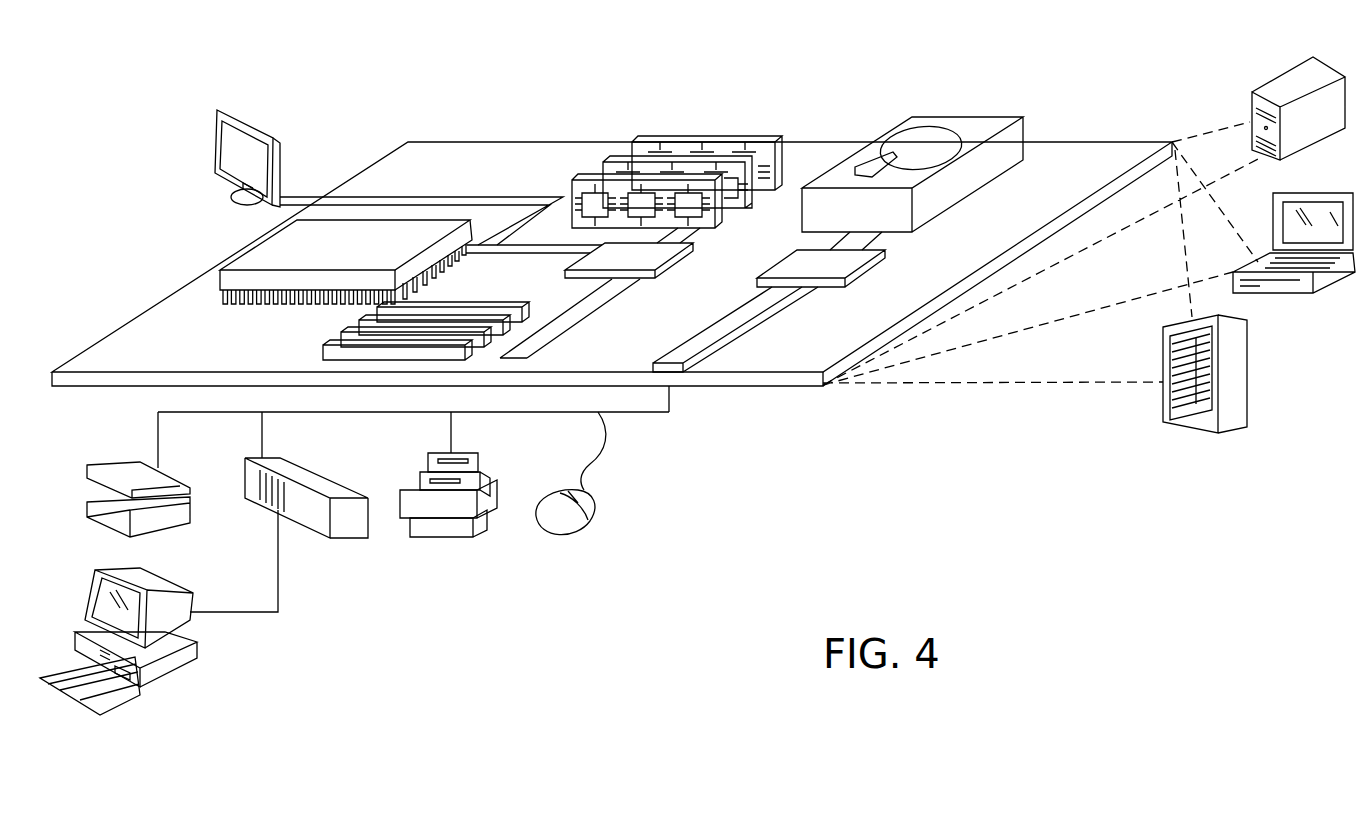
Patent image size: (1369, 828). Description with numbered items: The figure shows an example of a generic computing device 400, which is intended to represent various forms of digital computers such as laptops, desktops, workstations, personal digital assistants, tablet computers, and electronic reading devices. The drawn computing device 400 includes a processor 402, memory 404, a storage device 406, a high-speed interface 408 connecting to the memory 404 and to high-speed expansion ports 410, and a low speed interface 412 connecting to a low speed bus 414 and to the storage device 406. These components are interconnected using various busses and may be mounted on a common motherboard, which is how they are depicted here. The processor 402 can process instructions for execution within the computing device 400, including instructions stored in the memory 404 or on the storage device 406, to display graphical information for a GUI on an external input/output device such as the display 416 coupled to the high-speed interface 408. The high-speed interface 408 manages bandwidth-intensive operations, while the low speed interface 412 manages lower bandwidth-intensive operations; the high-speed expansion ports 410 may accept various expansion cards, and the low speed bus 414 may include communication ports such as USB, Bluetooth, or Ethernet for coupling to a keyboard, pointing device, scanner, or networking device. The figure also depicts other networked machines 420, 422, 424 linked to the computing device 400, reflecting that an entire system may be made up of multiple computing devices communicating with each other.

The computing device 400 is at (358, 93).
The processor 402 is at (245, 252).
The memory 404 is at (713, 135).
The storage device 406 is at (953, 117).
The high-speed interface 408 is at (643, 253).
The high-speed expansion ports 410 is at (352, 330).
The low speed interface 412 is at (792, 260).
The low speed bus 414 is at (675, 357).
The display 416 is at (222, 110).
The server computer 420 is at (1277, 87).
The laptop computer 422 is at (1332, 193).
The storage server 424 is at (1250, 373).